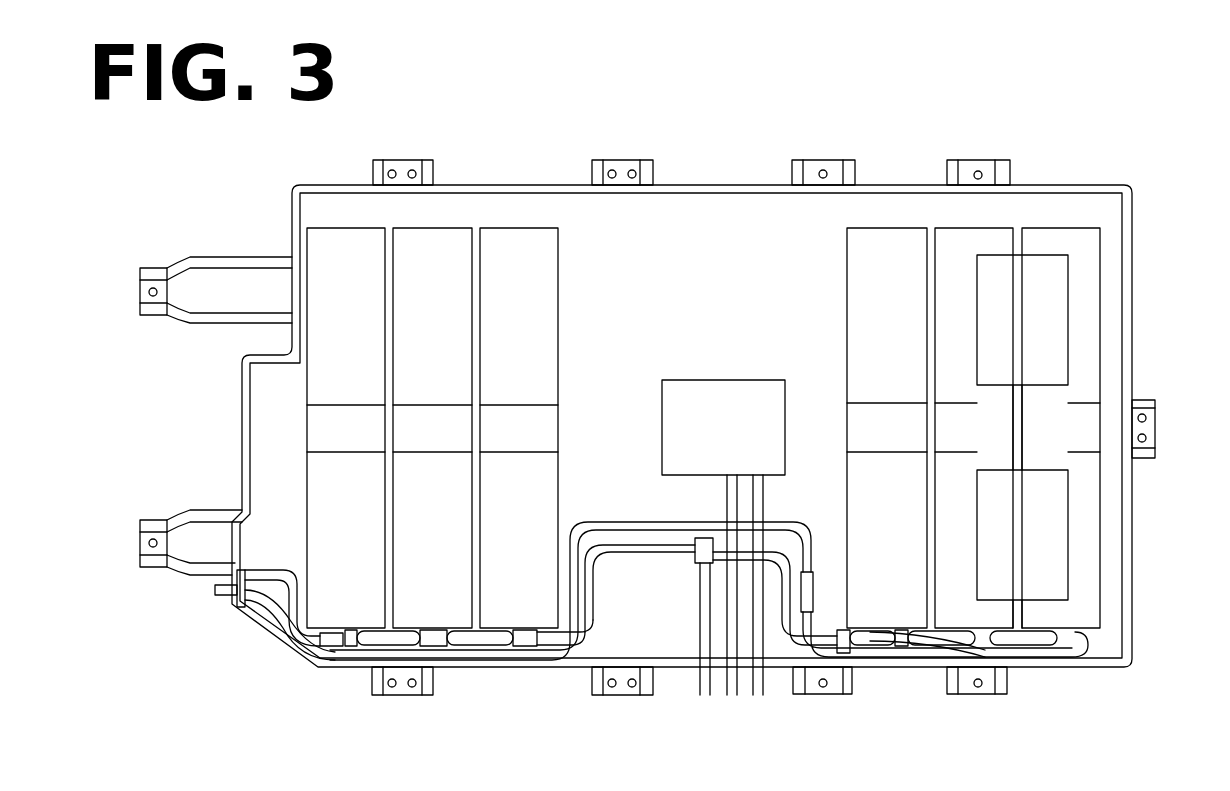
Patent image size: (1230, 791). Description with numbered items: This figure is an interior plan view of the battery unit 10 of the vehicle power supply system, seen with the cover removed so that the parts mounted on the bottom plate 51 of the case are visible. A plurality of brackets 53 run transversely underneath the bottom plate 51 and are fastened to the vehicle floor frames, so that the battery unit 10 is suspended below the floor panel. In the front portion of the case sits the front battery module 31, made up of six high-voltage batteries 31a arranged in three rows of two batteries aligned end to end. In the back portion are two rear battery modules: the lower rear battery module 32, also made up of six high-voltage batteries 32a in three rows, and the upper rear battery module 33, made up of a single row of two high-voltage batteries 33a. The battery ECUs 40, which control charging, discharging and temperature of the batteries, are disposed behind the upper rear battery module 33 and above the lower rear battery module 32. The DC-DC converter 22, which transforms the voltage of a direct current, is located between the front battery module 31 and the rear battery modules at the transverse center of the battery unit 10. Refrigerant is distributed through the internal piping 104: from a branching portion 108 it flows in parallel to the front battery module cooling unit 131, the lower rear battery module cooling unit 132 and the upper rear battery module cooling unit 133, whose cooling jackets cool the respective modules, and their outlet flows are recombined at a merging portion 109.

The battery unit 10 is at (1040, 152).
The bottom plate 51 is at (1106, 185).
The front battery module 31 is at (560, 275).
The high-voltage battery 31a is at (456, 245).
The lower rear battery module 32 is at (1100, 330).
The high-voltage battery 32a is at (966, 245).
The upper rear battery module 33 is at (847, 275).
The high-voltage battery 33a is at (881, 245).
The battery ECU 40 is at (1043, 293).
The DC-DC converter 22 is at (722, 385).
The bracket 53 is at (402, 698).
The internal piping 104 is at (600, 624).
The branching portion 108 is at (277, 607).
The merging portion 109 is at (692, 555).
The front battery module cooling unit 131 is at (520, 420).
The lower rear battery module cooling unit 132 is at (1072, 420).
The upper rear battery module cooling unit 133 is at (887, 425).